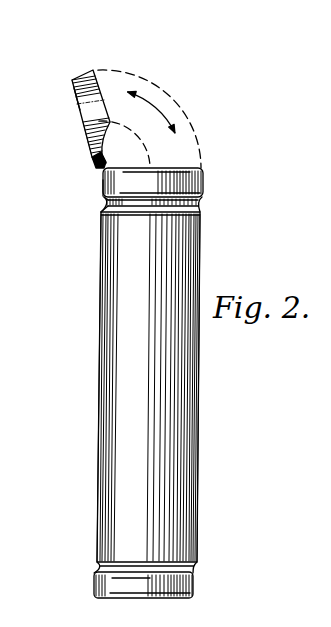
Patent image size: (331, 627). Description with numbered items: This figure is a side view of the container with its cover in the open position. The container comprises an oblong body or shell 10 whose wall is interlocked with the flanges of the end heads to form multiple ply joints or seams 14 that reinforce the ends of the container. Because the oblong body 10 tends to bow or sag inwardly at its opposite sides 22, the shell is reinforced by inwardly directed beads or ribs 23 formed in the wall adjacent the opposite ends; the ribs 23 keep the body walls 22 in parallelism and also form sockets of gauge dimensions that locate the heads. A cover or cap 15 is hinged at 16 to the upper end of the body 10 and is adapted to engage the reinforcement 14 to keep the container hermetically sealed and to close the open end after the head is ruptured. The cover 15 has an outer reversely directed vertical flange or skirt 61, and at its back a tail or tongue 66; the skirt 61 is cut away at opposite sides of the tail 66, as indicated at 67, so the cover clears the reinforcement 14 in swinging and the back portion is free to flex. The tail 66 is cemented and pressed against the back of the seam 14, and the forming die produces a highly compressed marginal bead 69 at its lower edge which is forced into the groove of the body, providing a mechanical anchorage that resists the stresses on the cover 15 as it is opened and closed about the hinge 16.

The body or shell 10 is at (184, 385).
The multiple ply joints or seams 14 is at (203, 178).
The cover or cap 15 is at (78, 123).
The hinge 16 is at (104, 186).
The opposite sides 22 is at (100, 415).
The inwardly directed beads or ribs 23 is at (205, 200).
The outer reversely directed vertical flange portion 61 is at (97, 87).
The tail or tongue 66 is at (106, 200).
The cut-away portions 67 is at (94, 161).
The compressed marginal bead 69 is at (109, 207).